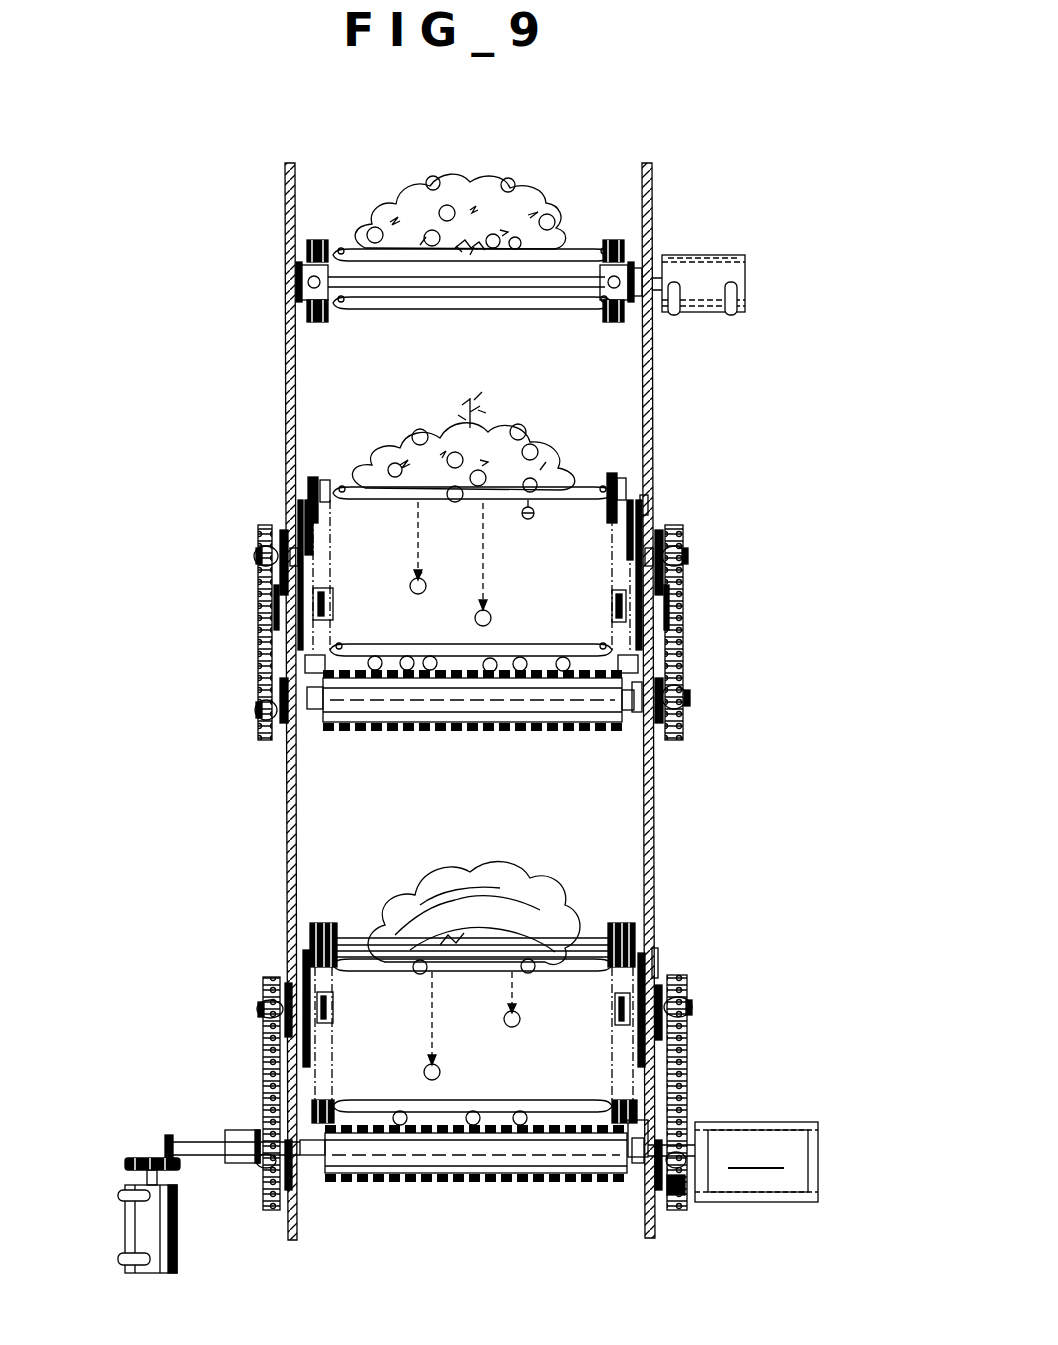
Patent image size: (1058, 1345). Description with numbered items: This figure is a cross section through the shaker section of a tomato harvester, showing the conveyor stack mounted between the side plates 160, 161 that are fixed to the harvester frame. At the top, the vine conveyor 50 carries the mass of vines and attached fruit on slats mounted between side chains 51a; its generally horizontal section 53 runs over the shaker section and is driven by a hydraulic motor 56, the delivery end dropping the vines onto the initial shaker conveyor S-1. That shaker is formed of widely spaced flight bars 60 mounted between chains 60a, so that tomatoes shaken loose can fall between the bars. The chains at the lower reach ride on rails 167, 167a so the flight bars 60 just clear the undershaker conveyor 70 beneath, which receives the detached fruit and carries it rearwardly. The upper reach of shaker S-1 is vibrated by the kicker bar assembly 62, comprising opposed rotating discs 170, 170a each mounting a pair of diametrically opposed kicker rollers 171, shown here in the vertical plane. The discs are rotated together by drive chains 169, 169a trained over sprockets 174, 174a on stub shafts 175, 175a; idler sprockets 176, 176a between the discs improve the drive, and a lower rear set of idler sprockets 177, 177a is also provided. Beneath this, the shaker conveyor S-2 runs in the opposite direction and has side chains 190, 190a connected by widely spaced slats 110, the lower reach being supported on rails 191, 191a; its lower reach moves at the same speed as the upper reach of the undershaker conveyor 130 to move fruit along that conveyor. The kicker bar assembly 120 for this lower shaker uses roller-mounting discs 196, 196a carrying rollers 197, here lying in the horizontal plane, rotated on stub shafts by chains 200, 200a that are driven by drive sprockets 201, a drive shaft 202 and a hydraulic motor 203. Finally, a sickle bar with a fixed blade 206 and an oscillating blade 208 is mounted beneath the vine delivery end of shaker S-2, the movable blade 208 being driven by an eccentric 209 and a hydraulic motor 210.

The vine conveyor 50 is at (338, 246).
The horizontal section 53 is at (570, 238).
The side chains 51a is at (630, 250).
The hydraulic motor 56 is at (745, 273).
The side plate 160 is at (288, 352).
The side plate 161 is at (655, 340).
The initial shaker conveyor S-1 is at (300, 489).
The flight bars 60 is at (458, 500).
The chains 60a is at (312, 655).
The kicker bar assembly 62 is at (652, 503).
The kicker rollers 171 is at (330, 519).
The rotating disc 170 is at (305, 541).
The rotating disc 170a is at (636, 542).
The sprocket 174 is at (262, 540).
The stub shaft 175 is at (256, 557).
The idler sprocket 176 is at (258, 602).
The drive chain 169 is at (262, 636).
The rail 167 is at (312, 670).
The idler sprocket 177 is at (260, 722).
The sprocket 174a is at (685, 538).
The stub shaft 175a is at (686, 557).
The idler sprocket 176a is at (685, 598).
The drive chain 169a is at (685, 634).
The rail 167a is at (640, 664).
The idler sprocket 177a is at (686, 690).
The undershaker conveyor 70 is at (438, 725).
The side chain 190 is at (317, 923).
The side chain 190a is at (617, 923).
The shaker conveyor S-2 is at (295, 944).
The kicker bar assembly 120 is at (657, 964).
The disc 196 is at (310, 987).
The disc 196a is at (643, 1034).
The rollers 197 is at (335, 1003).
The slats 110 is at (380, 1100).
The chain 200 is at (263, 1073).
The chain 200a is at (687, 1067).
The rail 191 is at (312, 1115).
The rail 191a is at (640, 1117).
The undershaker conveyor 130 is at (449, 1182).
The drive shaft 202 is at (511, 1170).
The oscillating blade 208 is at (193, 1137).
The fixed blade 206 is at (222, 1165).
The eccentric 209 is at (130, 1160).
The hydraulic motor 210 is at (125, 1224).
The hydraulic motor 203 is at (733, 1162).
The drive sprockets 201 is at (678, 1196).